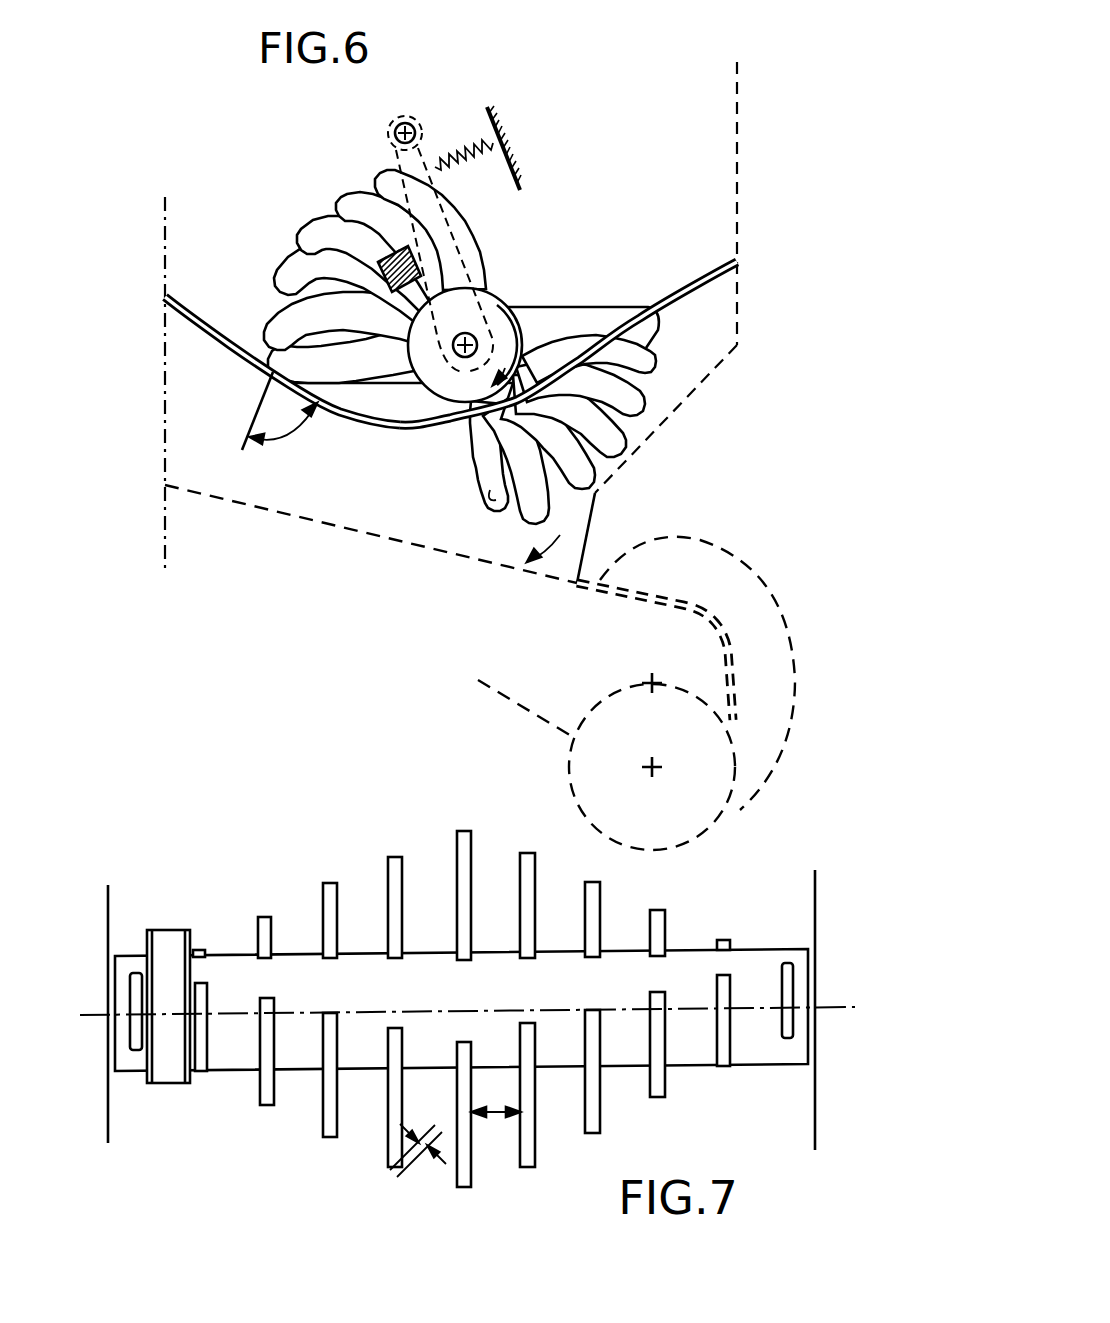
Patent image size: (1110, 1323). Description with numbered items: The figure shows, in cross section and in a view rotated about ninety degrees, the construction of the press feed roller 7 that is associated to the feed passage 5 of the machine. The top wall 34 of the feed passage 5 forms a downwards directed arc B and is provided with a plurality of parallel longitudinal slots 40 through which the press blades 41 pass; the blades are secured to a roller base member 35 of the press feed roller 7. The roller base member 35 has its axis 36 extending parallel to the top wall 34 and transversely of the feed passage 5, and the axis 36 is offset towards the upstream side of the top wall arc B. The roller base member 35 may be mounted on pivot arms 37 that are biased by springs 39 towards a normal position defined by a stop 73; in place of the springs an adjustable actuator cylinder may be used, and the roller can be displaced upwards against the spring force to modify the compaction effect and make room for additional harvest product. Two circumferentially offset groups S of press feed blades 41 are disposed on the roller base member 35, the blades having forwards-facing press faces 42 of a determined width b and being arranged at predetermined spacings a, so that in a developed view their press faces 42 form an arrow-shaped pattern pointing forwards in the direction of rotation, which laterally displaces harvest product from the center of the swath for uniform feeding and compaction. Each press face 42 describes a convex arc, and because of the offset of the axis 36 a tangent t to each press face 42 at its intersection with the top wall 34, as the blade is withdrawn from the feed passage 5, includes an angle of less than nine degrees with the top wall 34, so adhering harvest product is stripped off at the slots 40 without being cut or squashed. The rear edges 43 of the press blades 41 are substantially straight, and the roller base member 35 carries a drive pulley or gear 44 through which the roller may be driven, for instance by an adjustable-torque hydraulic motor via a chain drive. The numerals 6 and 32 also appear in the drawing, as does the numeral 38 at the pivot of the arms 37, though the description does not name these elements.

In FIG. 6, the feed passage 5 is at (297, 458).
In FIG. 6, the guide rail 6 is at (738, 593).
In FIG. 6, the press feed roller 7 is at (516, 374).
In FIG. 7, the press feed roller 7 is at (461, 1002).
In FIG. 6, the frame edge 32 is at (342, 533).
In FIG. 6, the top wall 34 is at (242, 338).
In FIG. 6, the roller base member 35 is at (484, 288).
In FIG. 7, the roller base member 35 is at (233, 977).
In FIG. 6, the axis 36 is at (457, 355).
In FIG. 6, the pivot arms 37 is at (385, 185).
In FIG. 6, the pivot 38 is at (414, 126).
In FIG. 6, the springs 39 is at (503, 125).
In FIG. 6, the longitudinal slots 40 is at (655, 318).
In FIG. 6, the press blades 41 is at (652, 367).
In FIG. 7, the press blades 41 is at (390, 1140).
In FIG. 6, the press faces 42 is at (497, 505).
In FIG. 7, the press faces 42 is at (390, 1170).
In FIG. 6, the rear edges 43 is at (600, 307).
In FIG. 7, the drive pulley or gear 44 is at (167, 953).
In FIG. 6, the stop 73 is at (382, 276).
In FIG. 6, the group of press feed blades S is at (300, 250).
In FIG. 7, the group of press feed blades S is at (310, 1103).
In FIG. 6, the top wall arc B is at (380, 423).
In FIG. 6, the tangent t is at (250, 408).
In FIG. 7, the spacing a is at (496, 1099).
In FIG. 7, the width b is at (418, 1137).